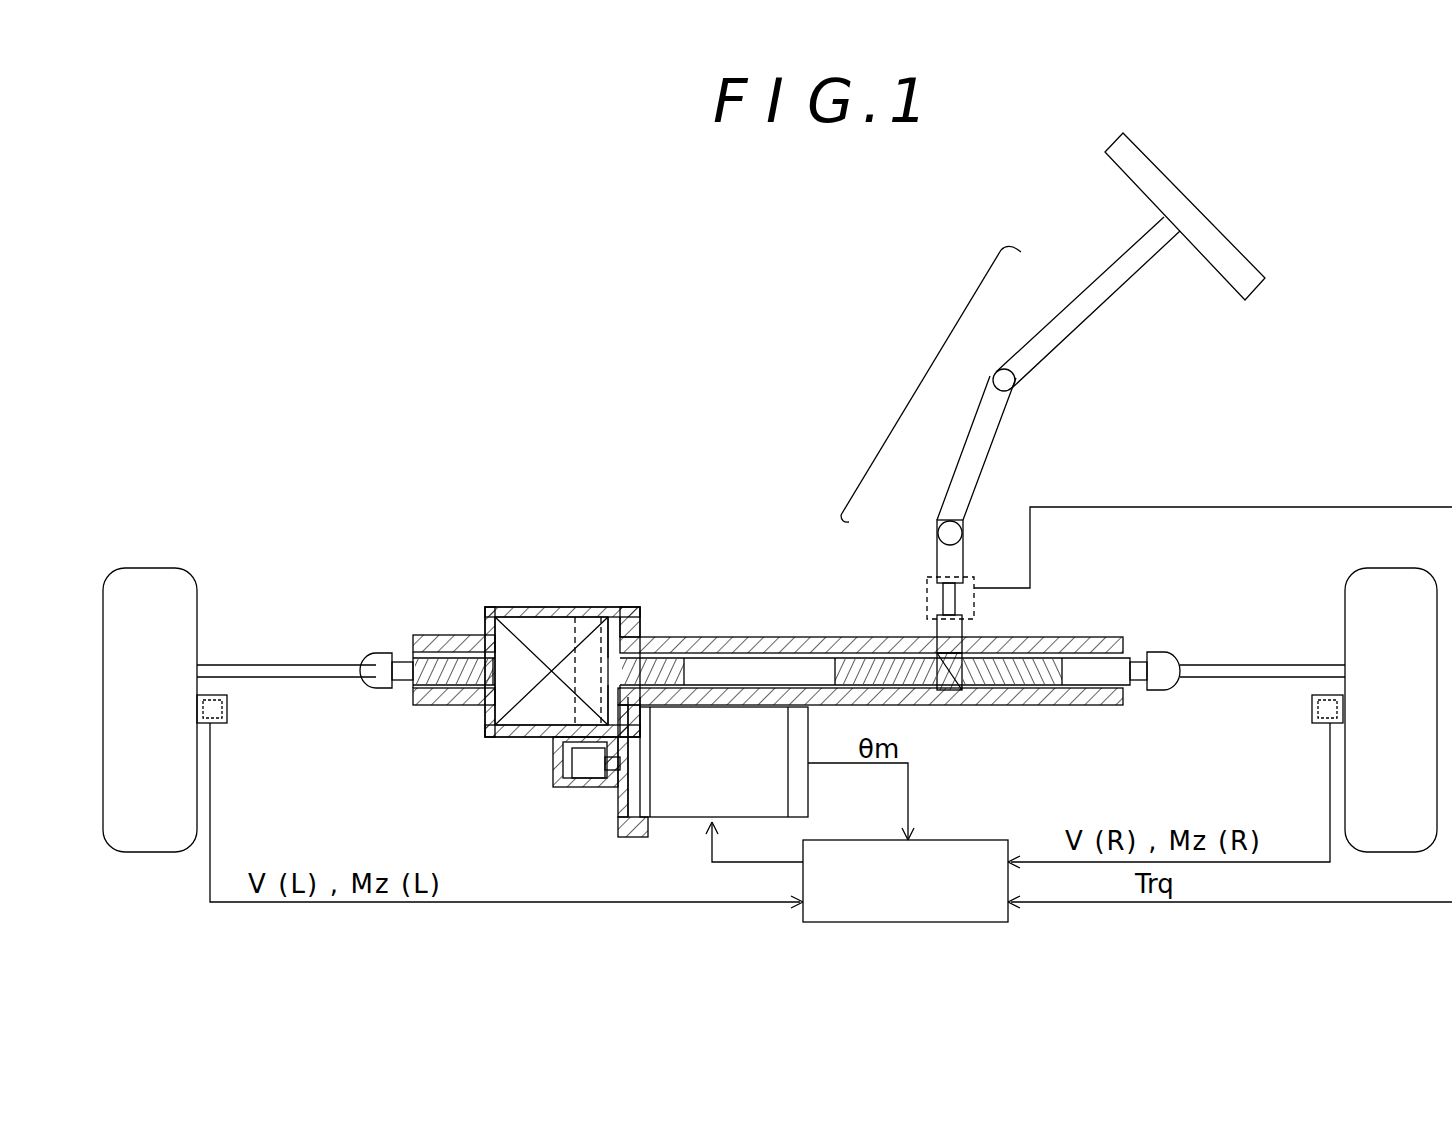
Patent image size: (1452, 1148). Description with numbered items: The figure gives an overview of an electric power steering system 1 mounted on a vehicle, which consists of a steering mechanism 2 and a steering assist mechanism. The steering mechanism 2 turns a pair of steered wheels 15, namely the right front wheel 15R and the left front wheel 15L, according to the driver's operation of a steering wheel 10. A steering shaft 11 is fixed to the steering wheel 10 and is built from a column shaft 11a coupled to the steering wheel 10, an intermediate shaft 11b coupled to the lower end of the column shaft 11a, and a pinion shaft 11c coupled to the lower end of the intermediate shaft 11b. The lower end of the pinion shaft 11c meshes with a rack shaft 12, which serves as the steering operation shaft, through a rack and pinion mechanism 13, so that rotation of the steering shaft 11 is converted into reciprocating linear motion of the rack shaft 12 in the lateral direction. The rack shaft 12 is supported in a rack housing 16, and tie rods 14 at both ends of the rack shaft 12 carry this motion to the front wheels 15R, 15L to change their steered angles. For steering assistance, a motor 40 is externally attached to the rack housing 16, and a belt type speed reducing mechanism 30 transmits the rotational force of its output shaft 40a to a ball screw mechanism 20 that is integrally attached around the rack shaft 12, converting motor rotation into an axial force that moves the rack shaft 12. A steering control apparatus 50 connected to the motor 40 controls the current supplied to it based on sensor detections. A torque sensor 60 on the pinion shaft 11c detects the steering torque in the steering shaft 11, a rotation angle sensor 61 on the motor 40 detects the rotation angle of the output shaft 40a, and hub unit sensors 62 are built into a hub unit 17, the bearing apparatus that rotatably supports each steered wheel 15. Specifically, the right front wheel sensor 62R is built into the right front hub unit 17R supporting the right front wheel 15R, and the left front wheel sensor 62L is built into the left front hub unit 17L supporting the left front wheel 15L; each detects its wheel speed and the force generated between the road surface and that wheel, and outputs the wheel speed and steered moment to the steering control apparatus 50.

The electric power steering system 1 is at (1348, 210).
The steering mechanism 2 is at (652, 326).
The steering wheel 10 is at (1205, 232).
The steering shaft 11 is at (924, 378).
The column shaft 11a is at (1078, 294).
The intermediate shaft 11b is at (972, 440).
The pinion shaft 11c is at (940, 563).
The rack shaft 12 is at (1102, 677).
The rack and pinion mechanism 13 is at (973, 713).
The tie rods 14 is at (307, 682).
The steered wheels 15 is at (771, 688).
The left front wheel 15L is at (130, 578).
The right front wheel 15R is at (1372, 578).
The rack housing 16 is at (1046, 705).
The hub unit 17 is at (771, 634).
The left front hub unit 17L is at (222, 680).
The right front hub unit 17R is at (1322, 690).
The ball screw mechanism 20 is at (488, 705).
The belt type speed reducing mechanism 30 is at (540, 762).
The motor 40 is at (738, 789).
The output shaft 40a is at (613, 774).
The steering control apparatus 50 is at (1030, 827).
The torque sensor 60 is at (970, 580).
The rotation angle sensor 61 is at (806, 800).
The hub unit sensors 62 is at (770, 801).
The left front wheel sensor 62L is at (233, 710).
The right front wheel sensor 62R is at (1305, 712).